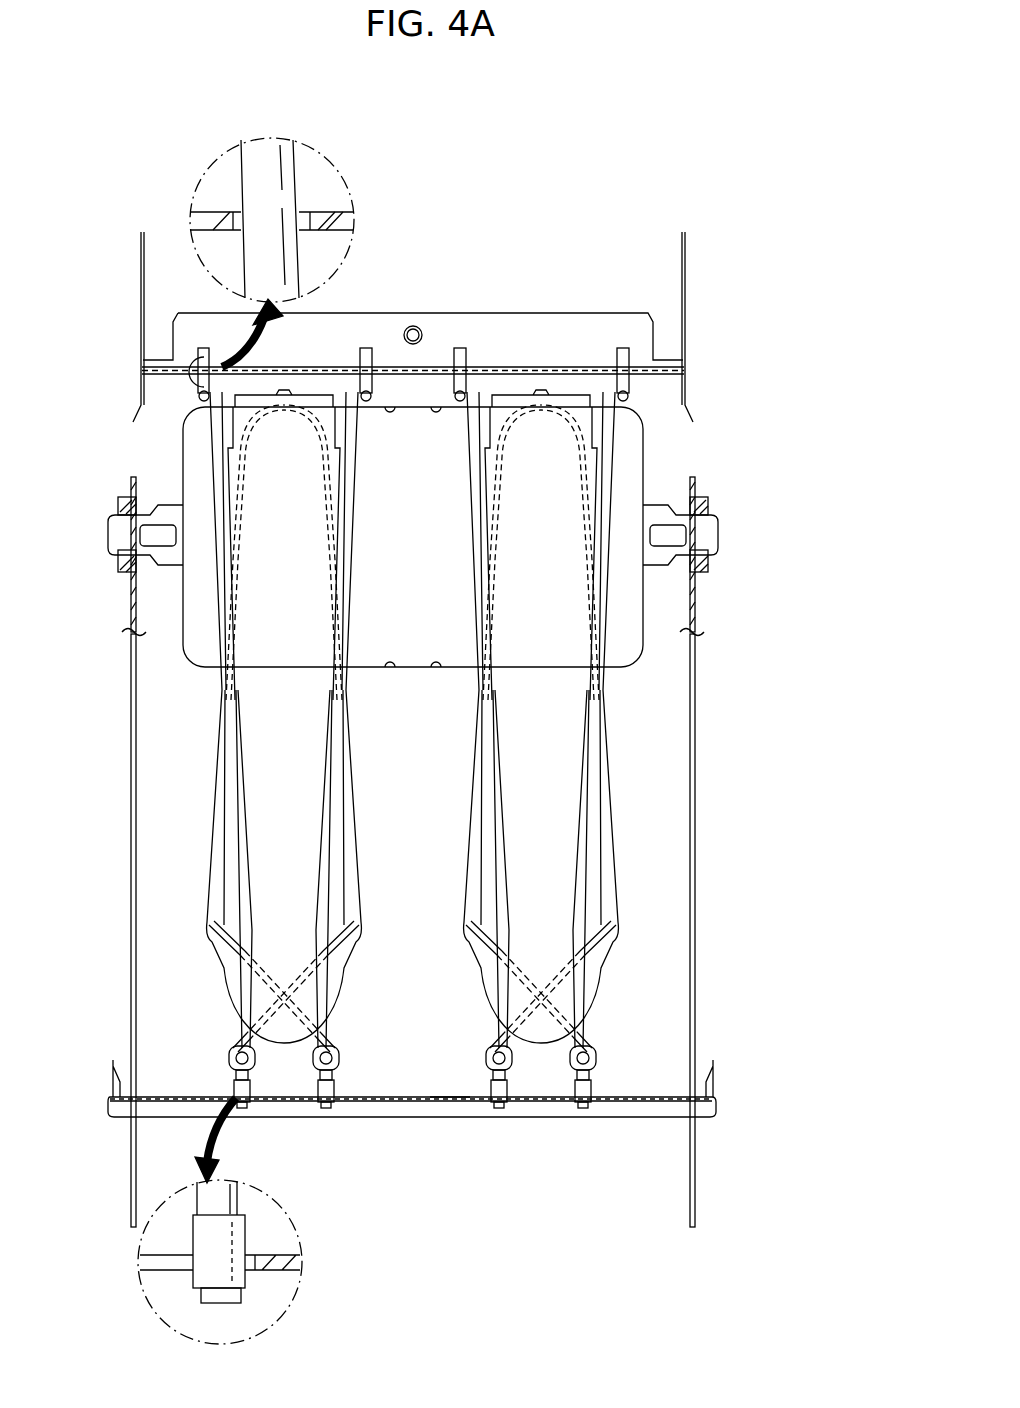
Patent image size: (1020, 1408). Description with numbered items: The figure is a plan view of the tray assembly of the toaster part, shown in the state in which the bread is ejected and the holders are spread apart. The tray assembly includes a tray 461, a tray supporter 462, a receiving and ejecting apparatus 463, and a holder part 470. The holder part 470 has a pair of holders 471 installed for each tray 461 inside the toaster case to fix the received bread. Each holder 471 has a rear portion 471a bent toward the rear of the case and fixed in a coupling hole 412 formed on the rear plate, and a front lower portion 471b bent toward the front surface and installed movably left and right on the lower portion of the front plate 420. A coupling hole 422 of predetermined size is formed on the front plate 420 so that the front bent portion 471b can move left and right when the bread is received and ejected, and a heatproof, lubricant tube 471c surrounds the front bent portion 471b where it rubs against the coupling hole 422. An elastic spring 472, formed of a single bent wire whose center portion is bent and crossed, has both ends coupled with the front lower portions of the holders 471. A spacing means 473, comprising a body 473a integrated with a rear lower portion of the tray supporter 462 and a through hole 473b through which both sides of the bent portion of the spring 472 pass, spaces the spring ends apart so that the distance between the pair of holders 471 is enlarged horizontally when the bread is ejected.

The coupling hole 412 is at (300, 232).
The front plate 420 is at (724, 1113).
The coupling hole 422 is at (450, 1099).
The tray 461 is at (380, 1030).
The tray supporter 462 is at (660, 458).
The receiving and ejecting apparatus 463 is at (695, 1000).
The holder part 470 is at (516, 736).
The holder 471 is at (580, 910).
The rear portion 471a is at (246, 176).
The front lower portion 471b is at (506, 1077).
The tube 471c is at (497, 1104).
The elastic spring 472 is at (616, 852).
The spacing means 473 is at (409, 302).
The body 473a is at (480, 394).
The through hole 473b is at (588, 337).